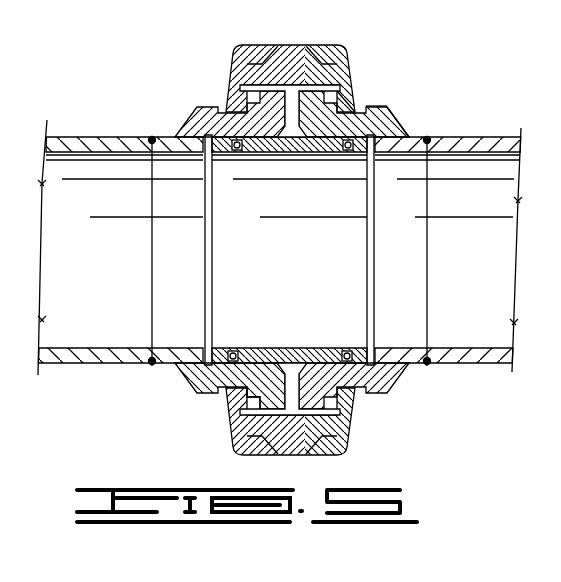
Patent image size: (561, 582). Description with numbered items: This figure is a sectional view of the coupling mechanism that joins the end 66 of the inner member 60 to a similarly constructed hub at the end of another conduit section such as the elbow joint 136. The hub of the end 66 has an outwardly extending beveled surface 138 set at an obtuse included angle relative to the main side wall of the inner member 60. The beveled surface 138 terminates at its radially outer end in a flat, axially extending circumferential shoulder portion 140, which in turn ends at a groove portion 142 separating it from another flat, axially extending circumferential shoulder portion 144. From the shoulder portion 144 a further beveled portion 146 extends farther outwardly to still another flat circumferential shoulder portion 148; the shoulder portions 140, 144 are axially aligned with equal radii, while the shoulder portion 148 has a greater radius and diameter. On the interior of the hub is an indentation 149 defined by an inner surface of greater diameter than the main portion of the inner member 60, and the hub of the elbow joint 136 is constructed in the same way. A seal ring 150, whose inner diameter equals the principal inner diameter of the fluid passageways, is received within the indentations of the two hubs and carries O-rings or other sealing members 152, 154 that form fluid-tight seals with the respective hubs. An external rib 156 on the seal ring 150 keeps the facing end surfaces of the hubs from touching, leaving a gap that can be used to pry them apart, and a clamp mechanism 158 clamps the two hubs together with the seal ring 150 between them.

The inner member 60 is at (487, 137).
The end of the inner member 66 is at (386, 99).
The elbow joint 136 is at (93, 137).
The beveled surface 138 is at (395, 121).
The shoulder portion 140 is at (396, 93).
The groove portion 142 is at (352, 100).
The shoulder portion 144 is at (358, 108).
The beveled portion 146 is at (332, 93).
The shoulder portion 148 is at (303, 90).
The indentation 149 is at (371, 165).
The seal ring 150 is at (187, 380).
The sealing member 152 is at (220, 390).
The sealing member 154 is at (377, 383).
The external rib 156 is at (323, 437).
The clamp mechanism 158 is at (243, 57).